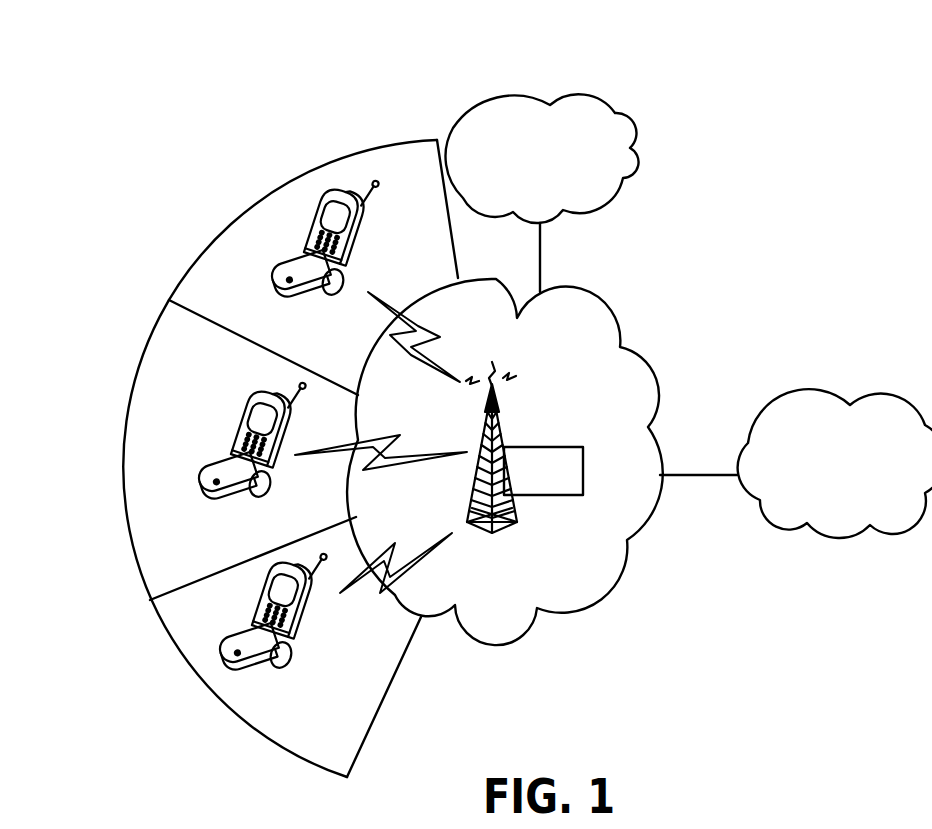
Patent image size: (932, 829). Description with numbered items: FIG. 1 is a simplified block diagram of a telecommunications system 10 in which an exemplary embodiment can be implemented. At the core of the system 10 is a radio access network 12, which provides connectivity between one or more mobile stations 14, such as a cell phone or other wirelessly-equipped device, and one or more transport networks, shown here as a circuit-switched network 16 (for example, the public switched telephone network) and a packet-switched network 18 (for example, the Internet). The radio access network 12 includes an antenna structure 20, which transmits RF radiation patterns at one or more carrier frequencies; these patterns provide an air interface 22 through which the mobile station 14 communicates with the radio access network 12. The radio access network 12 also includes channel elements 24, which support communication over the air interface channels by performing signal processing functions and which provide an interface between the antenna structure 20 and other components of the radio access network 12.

The telecommunications system 10 is at (141, 84).
The radio access network 12 is at (570, 623).
The mobile station 14 is at (313, 303).
The circuit-switched network 16 is at (908, 528).
The packet-switched network 18 is at (640, 158).
The antenna structure 20 is at (498, 428).
The air interface 22 is at (416, 356).
The channel element 24 is at (540, 495).